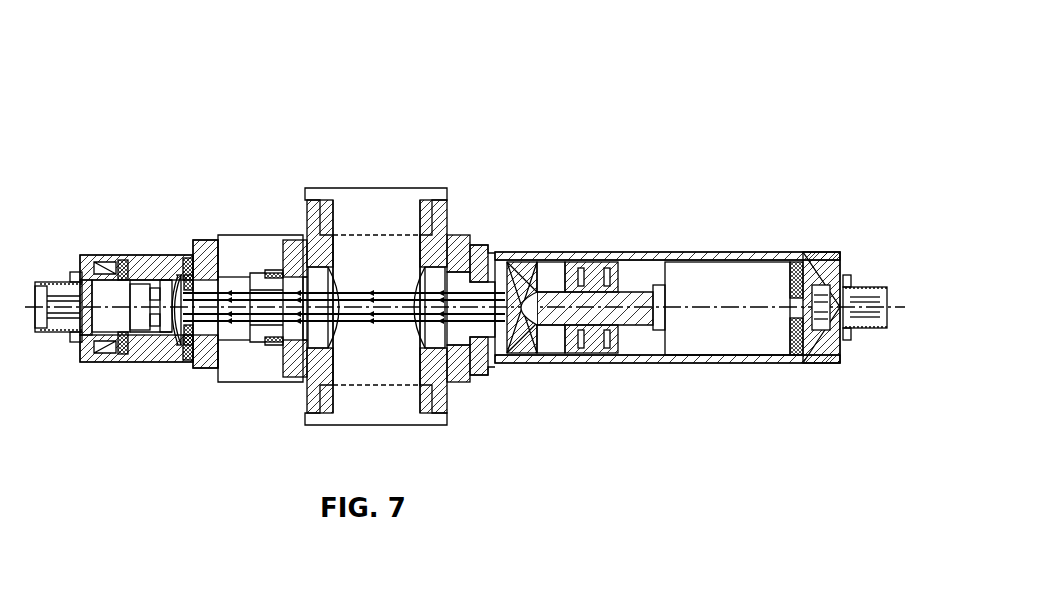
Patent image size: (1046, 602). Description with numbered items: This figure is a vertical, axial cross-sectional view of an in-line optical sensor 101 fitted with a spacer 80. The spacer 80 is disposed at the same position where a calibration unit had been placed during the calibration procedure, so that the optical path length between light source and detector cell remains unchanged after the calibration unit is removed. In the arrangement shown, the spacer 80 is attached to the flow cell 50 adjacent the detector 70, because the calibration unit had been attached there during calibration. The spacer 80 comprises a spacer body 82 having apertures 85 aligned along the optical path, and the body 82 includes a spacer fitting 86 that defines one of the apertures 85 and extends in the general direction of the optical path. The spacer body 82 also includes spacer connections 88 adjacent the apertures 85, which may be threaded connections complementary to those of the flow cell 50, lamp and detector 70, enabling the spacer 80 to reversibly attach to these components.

The in-line optical sensor 101 is at (465, 233).
The detector 70 is at (90, 255).
The apertures 85 is at (243, 329).
The spacer fitting 86 is at (205, 262).
The spacer connections 88 is at (193, 262).
The spacer 80 is at (218, 237).
The spacer body 82 is at (257, 236).
The flow cell 50 is at (443, 190).